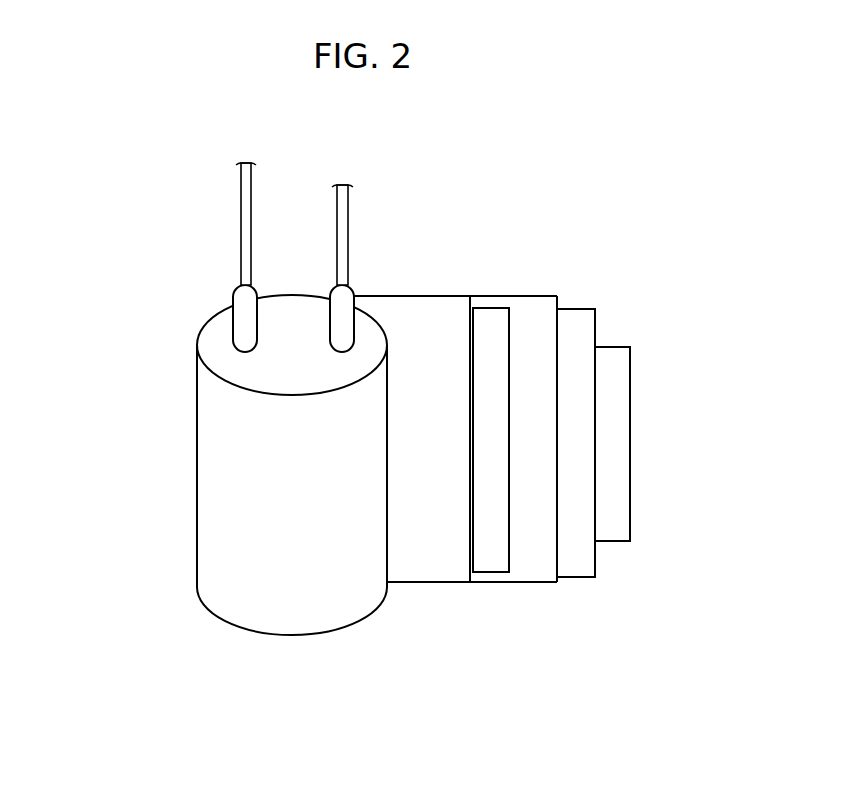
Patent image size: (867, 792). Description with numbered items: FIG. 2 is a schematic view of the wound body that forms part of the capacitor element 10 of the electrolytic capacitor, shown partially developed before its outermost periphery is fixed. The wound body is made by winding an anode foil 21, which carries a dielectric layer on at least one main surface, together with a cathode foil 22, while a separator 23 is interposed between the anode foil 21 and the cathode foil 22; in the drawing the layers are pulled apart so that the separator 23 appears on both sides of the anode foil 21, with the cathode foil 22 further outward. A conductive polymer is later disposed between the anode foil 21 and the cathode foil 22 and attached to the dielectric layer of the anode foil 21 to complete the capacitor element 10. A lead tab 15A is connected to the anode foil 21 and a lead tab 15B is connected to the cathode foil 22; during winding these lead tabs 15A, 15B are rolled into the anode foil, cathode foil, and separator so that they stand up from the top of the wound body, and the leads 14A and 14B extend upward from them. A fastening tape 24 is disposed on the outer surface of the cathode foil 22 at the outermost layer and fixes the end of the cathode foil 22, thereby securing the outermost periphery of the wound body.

The capacitor element 10 is at (468, 170).
The lead wire 14A is at (245, 200).
The lead wire 14B is at (345, 195).
The lead tab 15A is at (243, 303).
The lead tab 15B is at (345, 305).
The anode foil 21 is at (498, 553).
The cathode foil 22 is at (577, 568).
The separator 23 is at (439, 553).
The fastening tape 24 is at (612, 531).